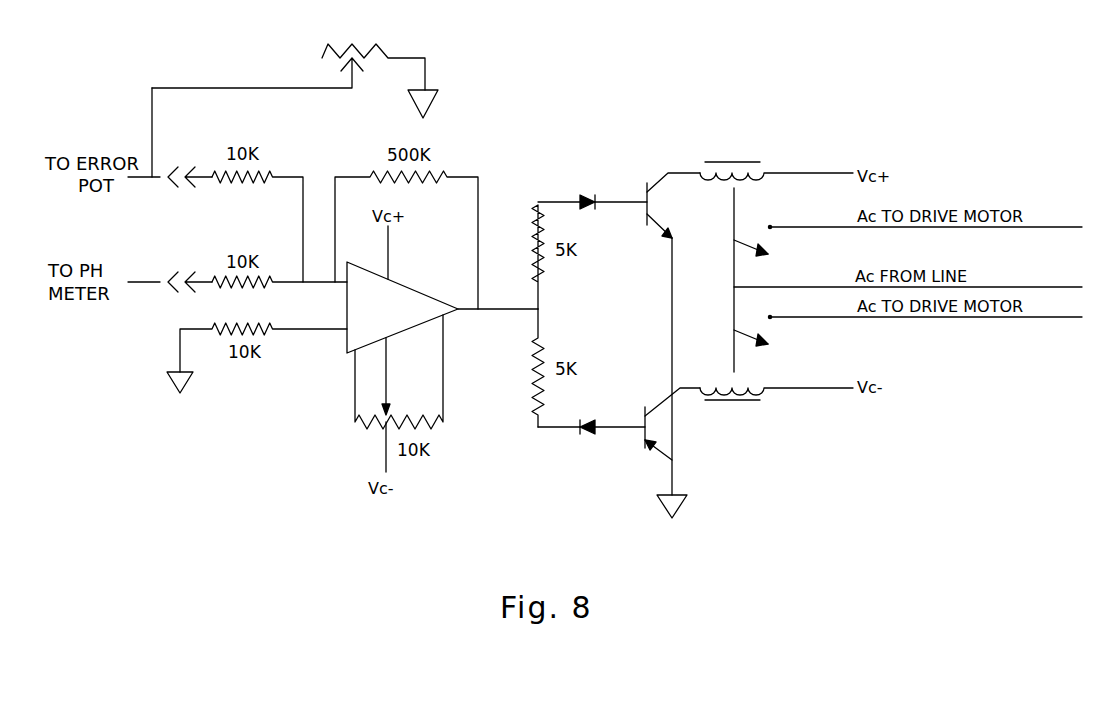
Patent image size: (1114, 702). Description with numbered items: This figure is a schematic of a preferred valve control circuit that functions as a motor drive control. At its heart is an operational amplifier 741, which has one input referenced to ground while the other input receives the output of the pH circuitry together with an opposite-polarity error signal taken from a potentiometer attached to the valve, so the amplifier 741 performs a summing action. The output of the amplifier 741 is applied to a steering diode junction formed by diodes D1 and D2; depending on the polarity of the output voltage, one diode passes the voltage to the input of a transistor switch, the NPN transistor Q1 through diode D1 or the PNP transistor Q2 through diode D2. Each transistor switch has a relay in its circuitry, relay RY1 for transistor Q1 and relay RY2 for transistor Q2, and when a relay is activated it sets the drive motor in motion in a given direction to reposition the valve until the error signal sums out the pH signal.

The operational amplifier 741 is at (402, 307).
The steering diode D1 is at (592, 189).
The steering diode D2 is at (591, 413).
The NPN transistor switch Q1 is at (659, 190).
The PNP transistor switch Q2 is at (650, 437).
The relay RY1 is at (776, 155).
The relay RY2 is at (776, 410).